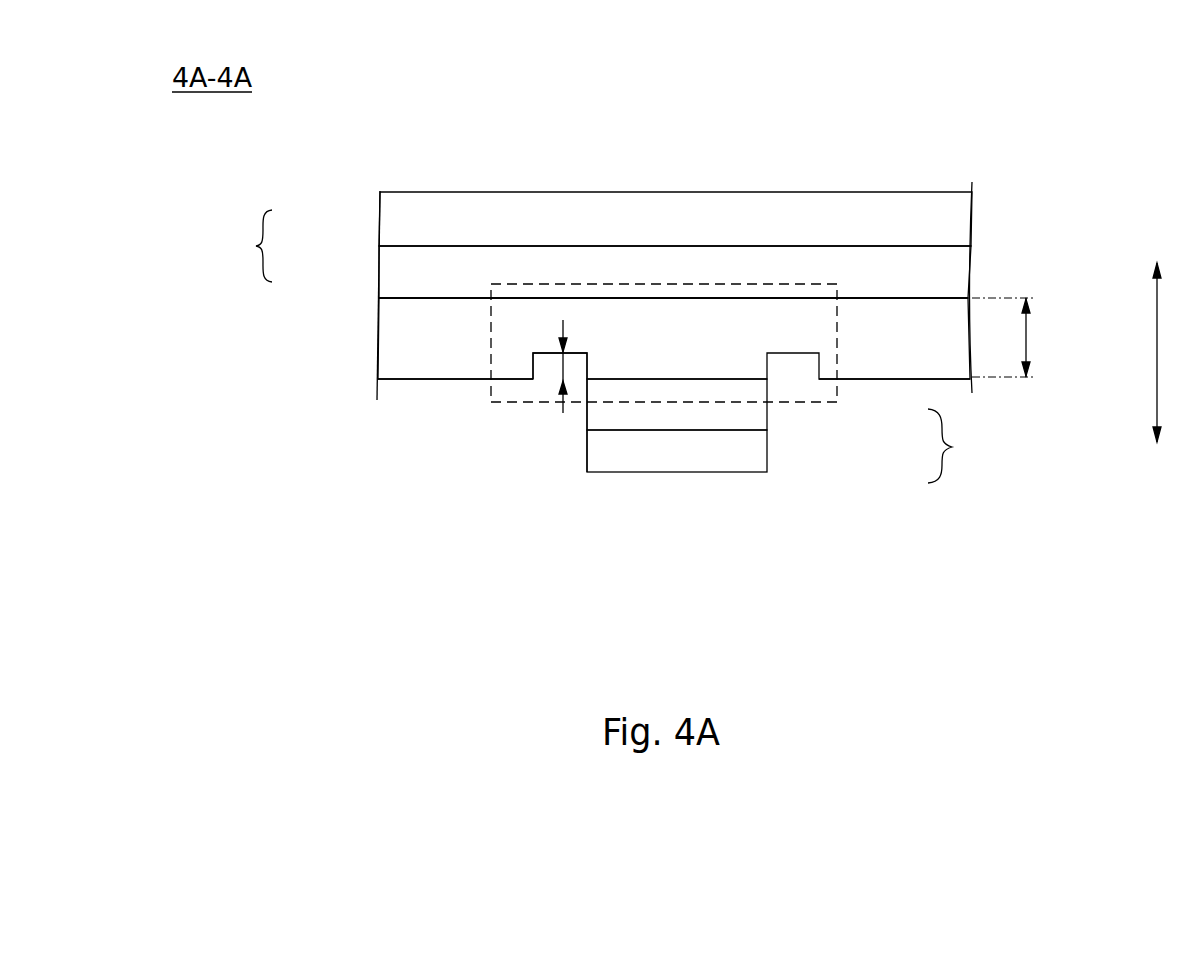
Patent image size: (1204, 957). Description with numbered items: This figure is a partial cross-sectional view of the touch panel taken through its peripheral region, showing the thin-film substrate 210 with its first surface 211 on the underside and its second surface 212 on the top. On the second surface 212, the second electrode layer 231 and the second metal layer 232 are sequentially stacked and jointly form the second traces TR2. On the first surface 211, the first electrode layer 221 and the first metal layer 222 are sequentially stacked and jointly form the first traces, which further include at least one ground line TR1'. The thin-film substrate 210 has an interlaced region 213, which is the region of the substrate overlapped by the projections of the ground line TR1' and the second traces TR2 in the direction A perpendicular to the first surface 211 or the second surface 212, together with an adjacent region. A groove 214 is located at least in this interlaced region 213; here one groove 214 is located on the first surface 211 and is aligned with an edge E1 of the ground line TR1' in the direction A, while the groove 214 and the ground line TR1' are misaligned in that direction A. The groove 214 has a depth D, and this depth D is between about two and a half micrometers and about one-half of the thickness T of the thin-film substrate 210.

The second metal layer 232 is at (379, 230).
The second electrode layer 231 is at (379, 265).
The second surface 212 is at (379, 291).
The thin-film substrate 210 is at (379, 336).
The first surface 211 is at (379, 389).
The interlaced region 213 is at (757, 283).
The groove 214 is at (540, 362).
The first electrode layer 221 is at (753, 420).
The first metal layer 222 is at (753, 453).
The second traces TR2 is at (238, 246).
The ground line TR1' is at (971, 446).
The depth D is at (558, 366).
The edge E1 is at (587, 447).
The thickness T is at (1015, 337).
The direction A is at (1156, 355).